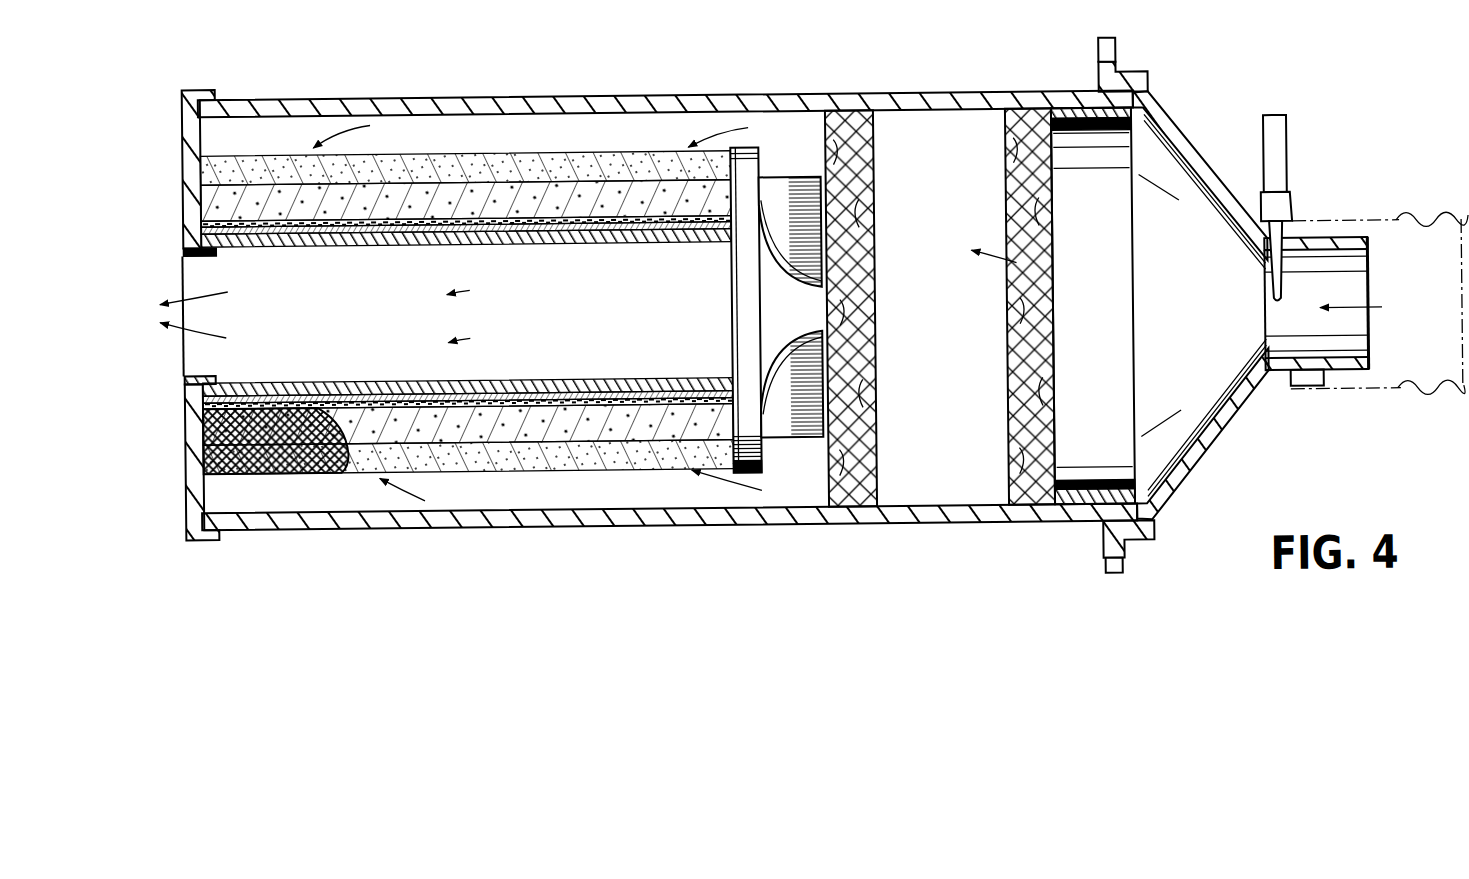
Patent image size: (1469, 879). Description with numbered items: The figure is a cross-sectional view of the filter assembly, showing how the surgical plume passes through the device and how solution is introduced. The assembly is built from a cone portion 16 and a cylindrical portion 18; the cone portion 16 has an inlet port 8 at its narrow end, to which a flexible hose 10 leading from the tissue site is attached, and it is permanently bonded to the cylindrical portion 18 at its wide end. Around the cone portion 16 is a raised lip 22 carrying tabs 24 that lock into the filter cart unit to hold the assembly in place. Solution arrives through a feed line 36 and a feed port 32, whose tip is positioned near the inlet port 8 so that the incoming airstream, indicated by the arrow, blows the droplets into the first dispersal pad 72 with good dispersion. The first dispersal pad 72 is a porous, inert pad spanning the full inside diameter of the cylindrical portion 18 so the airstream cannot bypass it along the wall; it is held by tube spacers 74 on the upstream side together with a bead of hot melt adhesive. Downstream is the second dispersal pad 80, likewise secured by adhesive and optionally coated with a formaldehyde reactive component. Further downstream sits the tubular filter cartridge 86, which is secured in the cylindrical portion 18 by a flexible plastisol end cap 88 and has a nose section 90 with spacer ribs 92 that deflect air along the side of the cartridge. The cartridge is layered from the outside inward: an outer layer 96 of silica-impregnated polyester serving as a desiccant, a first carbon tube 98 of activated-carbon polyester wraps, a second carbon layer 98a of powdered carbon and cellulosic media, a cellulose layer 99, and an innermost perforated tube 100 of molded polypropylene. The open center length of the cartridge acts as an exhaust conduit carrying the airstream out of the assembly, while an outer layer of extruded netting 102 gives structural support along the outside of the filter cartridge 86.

The inlet port 8 is at (1345, 380).
The flexible hose 10 is at (1420, 397).
The cone portion 16 is at (1222, 440).
The cylindrical portion 18 is at (780, 526).
The raised lip 22 is at (1141, 78).
The tabs 24 is at (1113, 41).
The feed port 32 is at (1293, 218).
The feed line 36 is at (1290, 140).
The first dispersal pad 72 is at (1010, 322).
The tube spacers 74 is at (1086, 488).
The second dispersal pad 80 is at (878, 360).
The filter cartridge 86 is at (483, 148).
The plastisol end cap 88 is at (186, 92).
The nose section 90 is at (763, 466).
The spacer ribs 92 is at (818, 330).
The outer layer 96 is at (495, 469).
The first carbon tube 98 is at (560, 440).
The second carbon layer 98a is at (560, 384).
The cellulose layer 99 is at (637, 380).
The perforated tube 100 is at (663, 377).
The extruded netting 102 is at (288, 470).